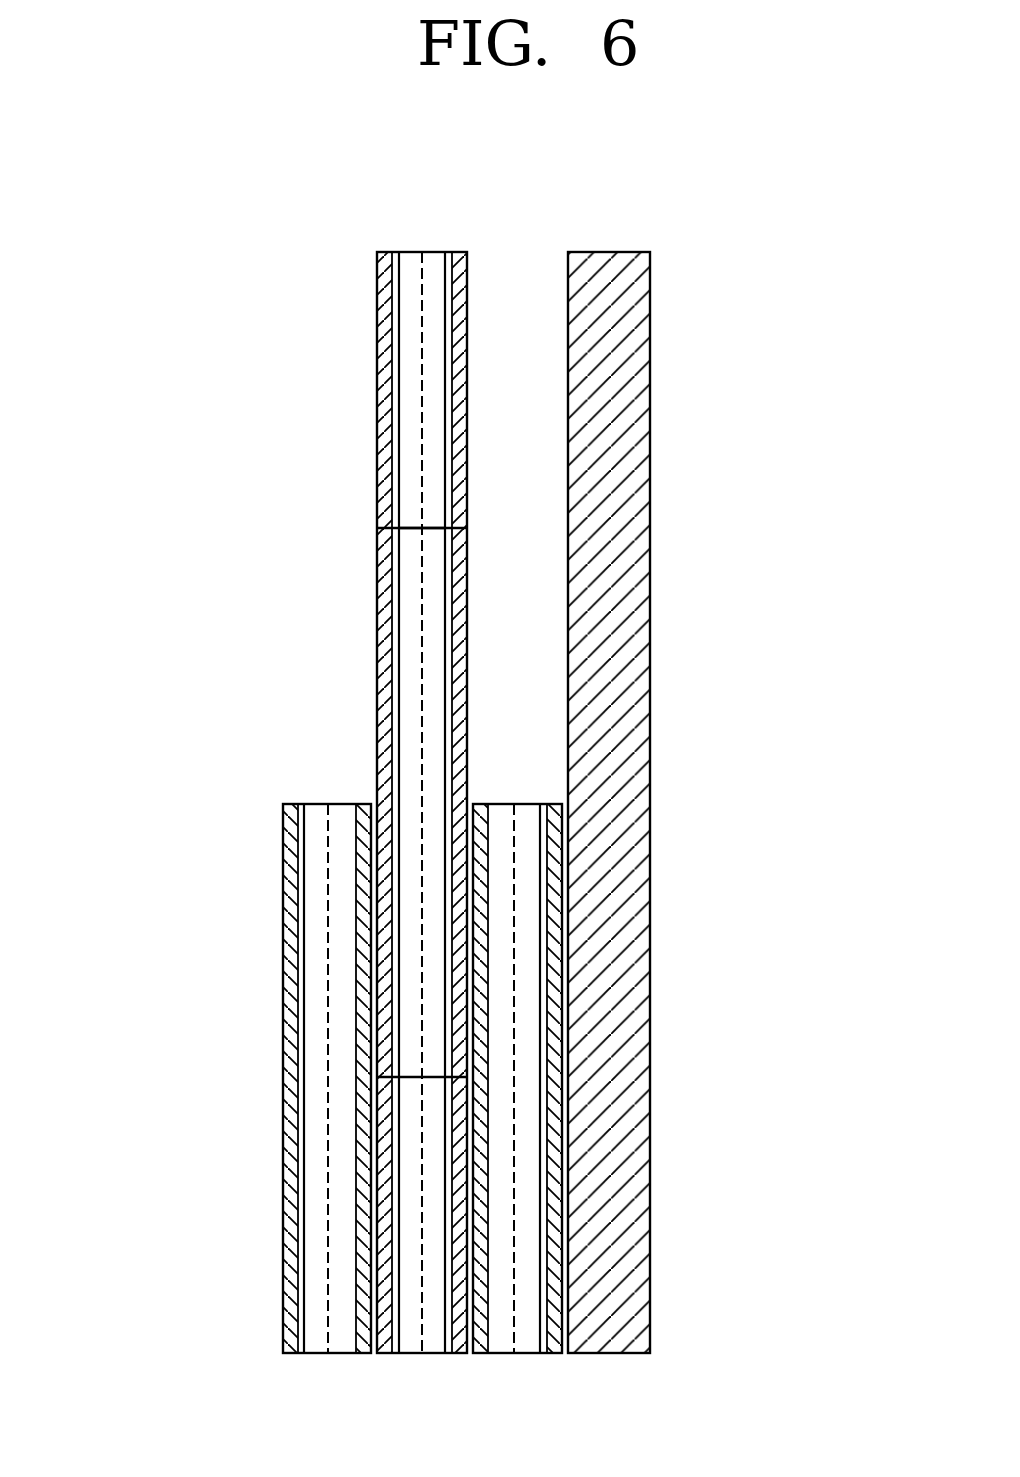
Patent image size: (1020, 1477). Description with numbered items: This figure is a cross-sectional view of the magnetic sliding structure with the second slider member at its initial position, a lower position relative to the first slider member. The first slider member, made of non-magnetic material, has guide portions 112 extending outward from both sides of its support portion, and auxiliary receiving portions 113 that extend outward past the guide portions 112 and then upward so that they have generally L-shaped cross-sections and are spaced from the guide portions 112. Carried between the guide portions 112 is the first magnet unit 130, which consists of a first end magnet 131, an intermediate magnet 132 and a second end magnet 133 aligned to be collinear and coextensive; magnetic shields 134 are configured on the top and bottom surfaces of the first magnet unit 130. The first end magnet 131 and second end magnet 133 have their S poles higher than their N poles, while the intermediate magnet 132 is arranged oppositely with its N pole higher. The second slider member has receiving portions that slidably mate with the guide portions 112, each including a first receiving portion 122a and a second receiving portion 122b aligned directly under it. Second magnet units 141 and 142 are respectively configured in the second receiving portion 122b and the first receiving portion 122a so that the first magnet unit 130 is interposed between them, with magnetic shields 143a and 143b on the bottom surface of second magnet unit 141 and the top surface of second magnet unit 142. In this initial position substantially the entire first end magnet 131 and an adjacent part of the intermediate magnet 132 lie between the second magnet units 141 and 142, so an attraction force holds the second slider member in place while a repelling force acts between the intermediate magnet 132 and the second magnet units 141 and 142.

The guide portion 112 is at (458, 630).
The auxiliary receiving portion 113 is at (625, 436).
The first receiving portion 122a is at (283, 842).
The second receiving portion 122b is at (565, 840).
The first magnet unit 130 is at (236, 497).
The first end magnet 131 is at (413, 1097).
The intermediate magnet 132 is at (410, 652).
The second end magnet 133 is at (410, 502).
The magnetic shield 134 is at (443, 268).
The second magnet unit 141 is at (528, 900).
The second magnet unit 142 is at (317, 902).
The magnetic shield 143a is at (545, 885).
The magnetic shield 143b is at (300, 887).